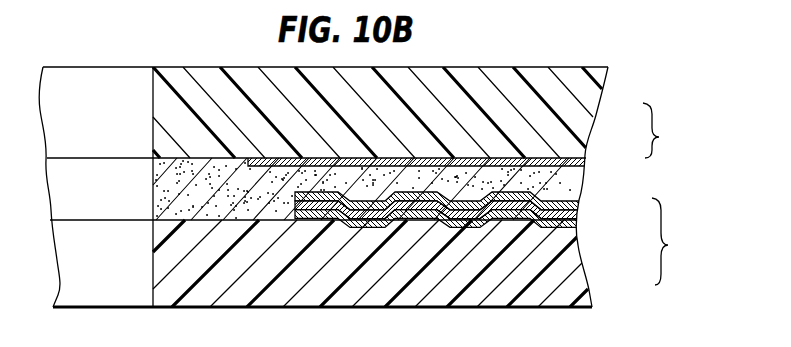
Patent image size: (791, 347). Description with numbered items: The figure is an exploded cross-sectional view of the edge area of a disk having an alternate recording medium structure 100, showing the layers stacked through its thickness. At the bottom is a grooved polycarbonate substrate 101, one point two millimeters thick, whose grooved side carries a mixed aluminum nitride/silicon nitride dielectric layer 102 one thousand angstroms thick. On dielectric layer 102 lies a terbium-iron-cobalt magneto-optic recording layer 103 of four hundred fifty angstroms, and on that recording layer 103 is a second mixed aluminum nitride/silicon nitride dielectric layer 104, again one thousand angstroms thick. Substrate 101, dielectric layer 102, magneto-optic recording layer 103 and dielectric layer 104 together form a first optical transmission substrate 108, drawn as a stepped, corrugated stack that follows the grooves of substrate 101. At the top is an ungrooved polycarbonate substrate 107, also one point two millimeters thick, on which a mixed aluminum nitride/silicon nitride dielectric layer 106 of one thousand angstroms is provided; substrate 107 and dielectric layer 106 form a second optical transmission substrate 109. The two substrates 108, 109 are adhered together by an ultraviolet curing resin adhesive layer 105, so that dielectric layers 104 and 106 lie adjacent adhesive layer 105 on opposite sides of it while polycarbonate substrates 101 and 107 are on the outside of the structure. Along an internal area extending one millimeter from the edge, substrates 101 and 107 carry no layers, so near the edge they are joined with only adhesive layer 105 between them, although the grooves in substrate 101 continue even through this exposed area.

The recording medium structure 100 is at (685, 65).
The polycarbonate substrate 101 is at (567, 270).
The dielectric layer 102 is at (573, 221).
The magneto-optic recording layer 103 is at (573, 213).
The second dielectric layer 104 is at (572, 204).
The ultraviolet curing resin adhesive layer 105 is at (578, 182).
The dielectric layer 106 is at (581, 160).
The ungrooved polycarbonate substrate 107 is at (585, 122).
The first optical transmission substrate 108 is at (676, 241).
The second optical transmission substrate 109 is at (667, 130).